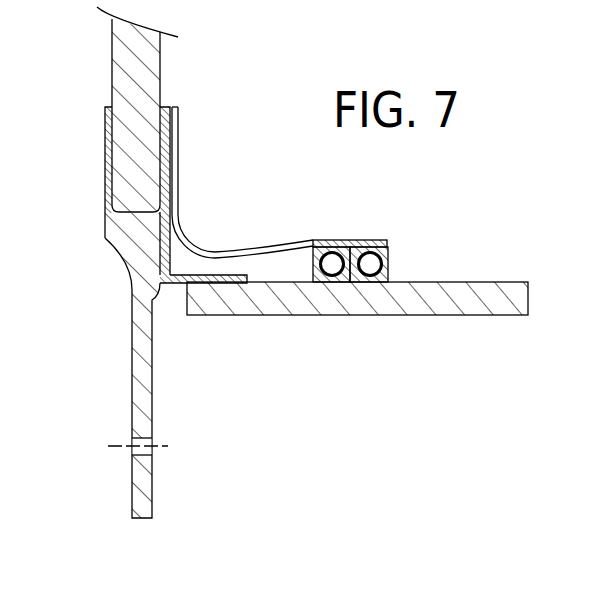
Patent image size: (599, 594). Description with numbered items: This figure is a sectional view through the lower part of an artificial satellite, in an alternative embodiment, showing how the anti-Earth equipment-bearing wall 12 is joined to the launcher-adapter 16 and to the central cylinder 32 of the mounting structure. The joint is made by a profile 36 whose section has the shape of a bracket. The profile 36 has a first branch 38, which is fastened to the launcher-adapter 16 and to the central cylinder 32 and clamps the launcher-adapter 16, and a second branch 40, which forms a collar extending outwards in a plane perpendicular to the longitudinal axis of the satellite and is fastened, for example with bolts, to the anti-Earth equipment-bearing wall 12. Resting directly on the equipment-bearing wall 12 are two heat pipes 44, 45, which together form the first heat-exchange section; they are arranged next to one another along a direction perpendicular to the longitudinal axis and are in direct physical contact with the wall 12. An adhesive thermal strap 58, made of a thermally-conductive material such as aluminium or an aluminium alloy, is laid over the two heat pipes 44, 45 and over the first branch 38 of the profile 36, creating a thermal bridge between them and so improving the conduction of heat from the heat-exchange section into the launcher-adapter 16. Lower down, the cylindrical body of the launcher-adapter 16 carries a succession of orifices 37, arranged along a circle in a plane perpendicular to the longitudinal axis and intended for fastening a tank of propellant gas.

The anti-Earth equipment-bearing wall 12 is at (478, 300).
The launcher-adapter 16 is at (133, 370).
The central cylinder 32 is at (125, 82).
The profile 36 is at (178, 199).
The orifices 37 is at (152, 451).
The first branch 38 is at (165, 132).
The second branch 40 is at (218, 280).
The heat pipe 44 is at (330, 280).
The heat pipe 45 is at (373, 280).
The adhesive thermal strap 58 is at (376, 242).